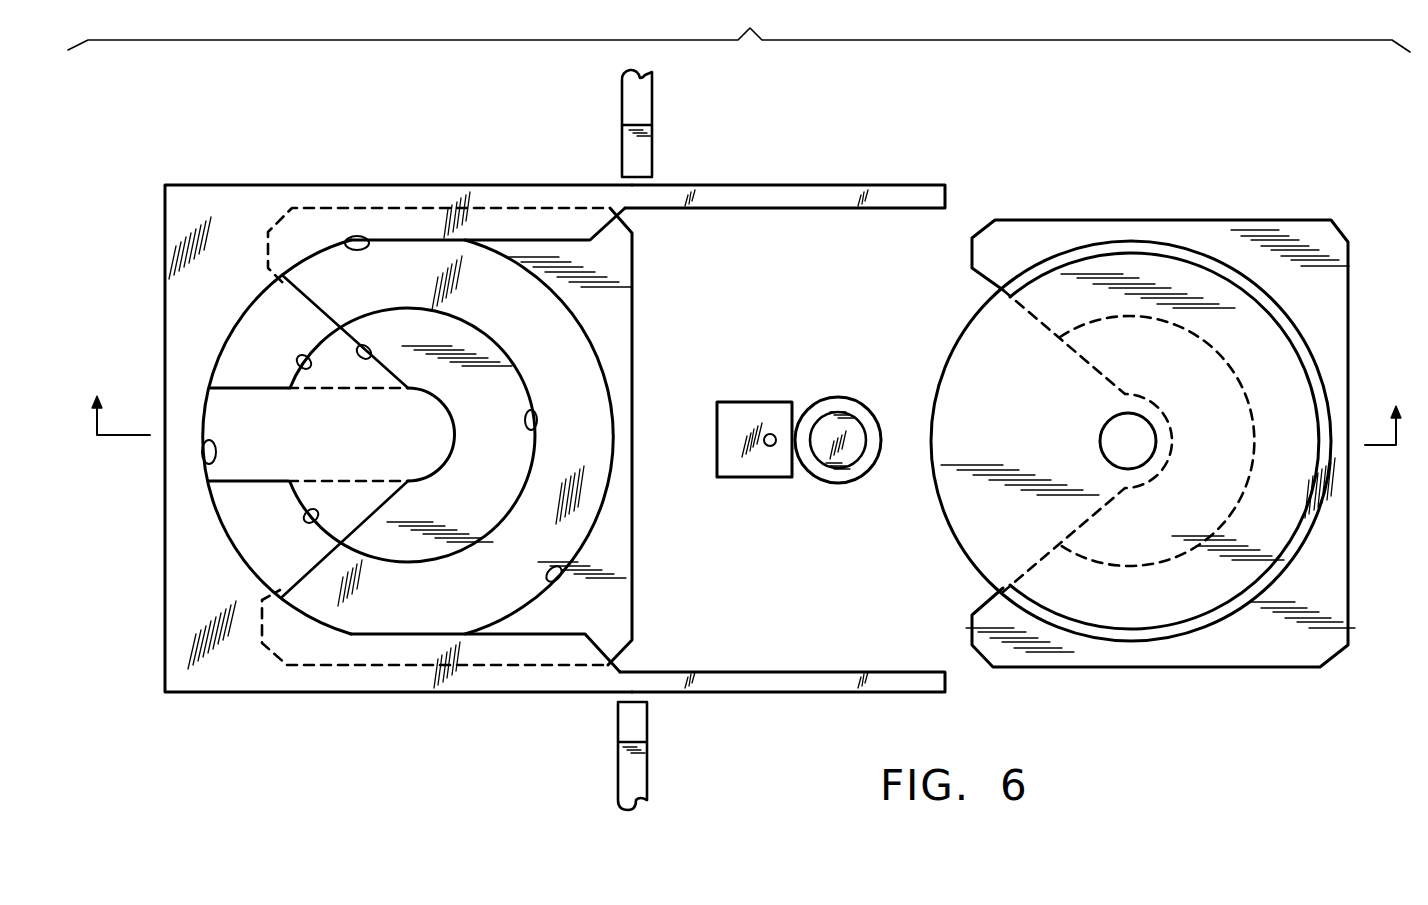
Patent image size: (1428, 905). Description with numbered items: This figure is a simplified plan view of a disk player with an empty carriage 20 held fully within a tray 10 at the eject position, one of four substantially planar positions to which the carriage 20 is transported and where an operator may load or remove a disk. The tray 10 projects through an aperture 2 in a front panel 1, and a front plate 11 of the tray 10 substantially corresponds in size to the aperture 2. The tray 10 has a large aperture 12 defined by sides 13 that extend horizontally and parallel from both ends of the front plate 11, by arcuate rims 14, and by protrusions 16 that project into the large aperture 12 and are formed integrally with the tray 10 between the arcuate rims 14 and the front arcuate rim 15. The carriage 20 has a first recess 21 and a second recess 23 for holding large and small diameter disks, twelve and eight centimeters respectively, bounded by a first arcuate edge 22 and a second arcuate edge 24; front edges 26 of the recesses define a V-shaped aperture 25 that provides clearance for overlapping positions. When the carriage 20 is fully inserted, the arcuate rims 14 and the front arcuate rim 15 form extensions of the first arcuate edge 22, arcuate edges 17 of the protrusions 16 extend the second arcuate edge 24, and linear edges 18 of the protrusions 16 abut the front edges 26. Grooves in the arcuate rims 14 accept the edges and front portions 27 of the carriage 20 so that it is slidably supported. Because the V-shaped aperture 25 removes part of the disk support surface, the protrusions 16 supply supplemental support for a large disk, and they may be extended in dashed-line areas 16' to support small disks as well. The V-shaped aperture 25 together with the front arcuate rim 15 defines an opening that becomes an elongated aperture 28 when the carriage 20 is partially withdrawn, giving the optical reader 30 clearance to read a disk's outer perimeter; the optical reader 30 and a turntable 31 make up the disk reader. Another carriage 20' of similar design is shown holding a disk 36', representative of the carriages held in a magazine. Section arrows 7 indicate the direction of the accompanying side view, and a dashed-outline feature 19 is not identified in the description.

The front panel 1 is at (630, 96).
The aperture 2 is at (620, 186).
The section line 7- 7 is at (756, 400).
The tray 10 is at (519, 166).
The front plate 11 is at (165, 315).
The large aperture 12 is at (761, 622).
The sides 13 is at (893, 192).
The arcuate rims 14 is at (372, 245).
The front arcuate rim 15 is at (206, 464).
The protrusions 16 is at (294, 359).
The areas 16' is at (232, 336).
The arcuate edges 17 is at (306, 356).
The linear edges 18 is at (285, 278).
The hidden outline of pocket 19 is at (300, 208).
The carriage 20 is at (474, 437).
The carriage 20' is at (1143, 412).
The first recess 21 is at (499, 569).
The first arcuate edge 22 is at (563, 567).
The second recess 23 is at (466, 504).
The second arcuate edge 24 is at (533, 415).
The V-shaped aperture 25 is at (356, 452).
The front edges 26 is at (374, 350).
The front portions 27 is at (286, 278).
The elongated aperture 28 is at (278, 452).
The optical reader 30 is at (777, 402).
The turntable 31 is at (808, 405).
The disk 36' is at (1023, 441).